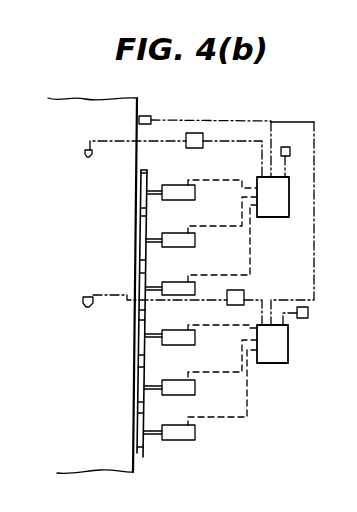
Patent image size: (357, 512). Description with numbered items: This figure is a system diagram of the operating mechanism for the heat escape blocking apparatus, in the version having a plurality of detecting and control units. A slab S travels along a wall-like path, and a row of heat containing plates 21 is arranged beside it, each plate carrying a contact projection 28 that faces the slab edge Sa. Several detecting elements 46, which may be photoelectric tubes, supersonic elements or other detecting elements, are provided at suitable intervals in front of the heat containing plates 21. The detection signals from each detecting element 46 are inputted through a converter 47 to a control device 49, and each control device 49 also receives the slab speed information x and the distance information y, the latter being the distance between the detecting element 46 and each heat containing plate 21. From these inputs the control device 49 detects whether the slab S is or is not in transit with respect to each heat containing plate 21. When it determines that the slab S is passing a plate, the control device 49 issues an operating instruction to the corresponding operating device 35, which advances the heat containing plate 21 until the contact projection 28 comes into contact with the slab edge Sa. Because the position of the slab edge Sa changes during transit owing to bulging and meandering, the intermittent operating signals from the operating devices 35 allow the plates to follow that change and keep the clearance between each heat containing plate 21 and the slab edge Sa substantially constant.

The slab S is at (84, 239).
The slab edge Sa is at (145, 104).
The heat containing plate 21 is at (148, 447).
The contact projection 28 is at (140, 455).
The operating device 35 is at (190, 440).
The detecting element 46 is at (88, 157).
The converter 47 is at (195, 148).
The control device 49 is at (270, 217).
The slab speed information x is at (233, 121).
The distance information y is at (286, 169).